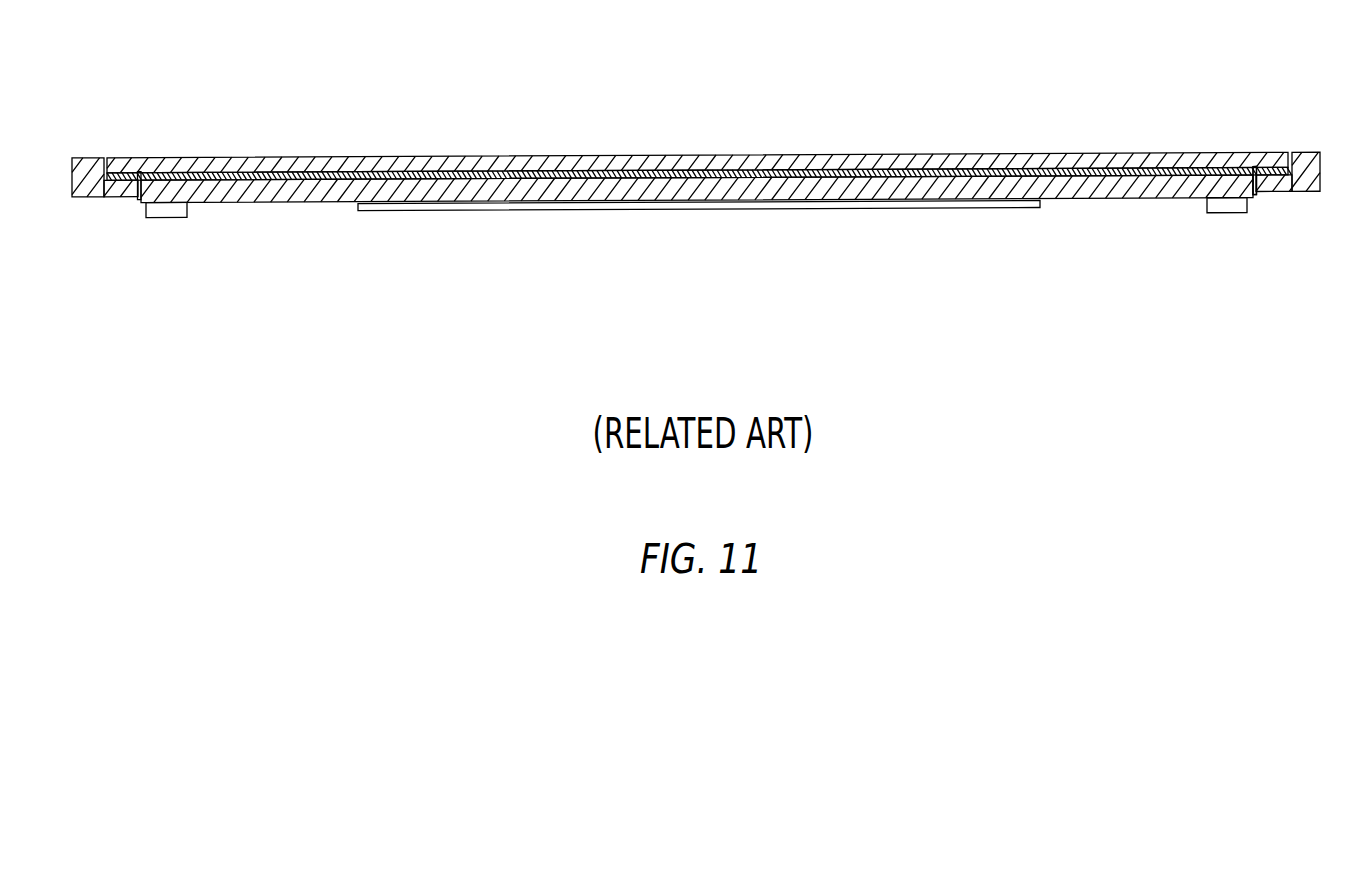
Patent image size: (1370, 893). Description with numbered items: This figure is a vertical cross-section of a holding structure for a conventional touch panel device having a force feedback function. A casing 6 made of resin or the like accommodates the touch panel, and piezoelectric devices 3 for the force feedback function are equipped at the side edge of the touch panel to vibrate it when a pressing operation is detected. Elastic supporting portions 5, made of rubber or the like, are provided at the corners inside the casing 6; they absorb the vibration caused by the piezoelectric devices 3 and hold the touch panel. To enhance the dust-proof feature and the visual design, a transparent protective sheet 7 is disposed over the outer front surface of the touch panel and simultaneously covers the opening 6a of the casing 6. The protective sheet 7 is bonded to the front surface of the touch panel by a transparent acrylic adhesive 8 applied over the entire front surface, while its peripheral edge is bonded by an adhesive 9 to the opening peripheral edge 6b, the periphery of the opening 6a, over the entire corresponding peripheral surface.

The piezoelectric device 3 is at (737, 205).
The elastic supporting portion 5 is at (167, 210).
The casing 6 is at (1307, 178).
The opening 6a is at (1257, 200).
The opening peripheral edge 6b is at (1273, 183).
The protective sheet 7 is at (755, 165).
The adhesive 8 is at (837, 173).
The adhesive 9 is at (122, 173).